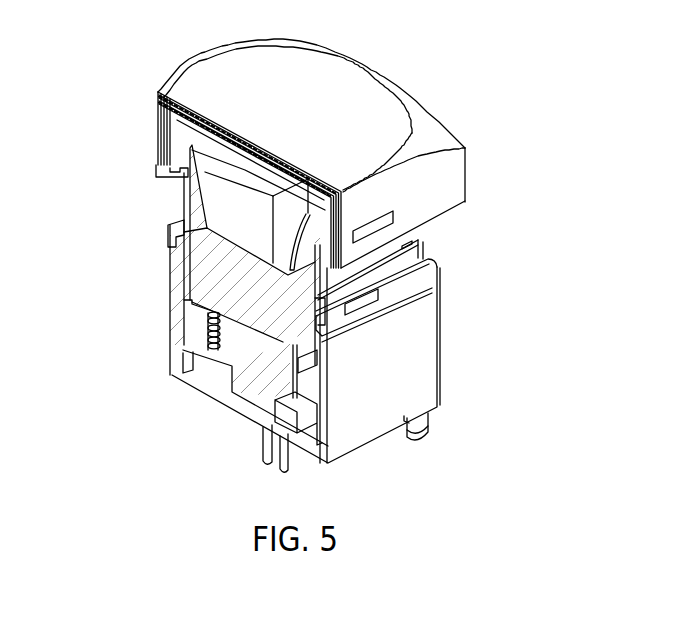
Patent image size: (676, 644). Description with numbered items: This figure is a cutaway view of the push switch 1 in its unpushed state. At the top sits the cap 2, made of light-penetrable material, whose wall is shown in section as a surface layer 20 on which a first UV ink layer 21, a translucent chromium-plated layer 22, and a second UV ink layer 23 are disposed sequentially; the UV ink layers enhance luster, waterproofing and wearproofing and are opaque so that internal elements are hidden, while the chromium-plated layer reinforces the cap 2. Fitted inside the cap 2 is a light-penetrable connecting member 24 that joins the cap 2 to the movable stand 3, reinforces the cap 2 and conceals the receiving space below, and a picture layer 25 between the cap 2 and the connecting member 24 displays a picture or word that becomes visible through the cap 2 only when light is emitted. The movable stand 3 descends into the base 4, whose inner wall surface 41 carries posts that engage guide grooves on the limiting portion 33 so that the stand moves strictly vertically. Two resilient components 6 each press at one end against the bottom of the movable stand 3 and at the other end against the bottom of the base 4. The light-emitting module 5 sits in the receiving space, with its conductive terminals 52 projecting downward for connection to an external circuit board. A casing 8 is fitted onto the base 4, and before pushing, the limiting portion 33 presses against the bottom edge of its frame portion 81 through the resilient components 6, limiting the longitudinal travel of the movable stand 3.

The push switch 1 is at (430, 63).
The cap 2 is at (84, 58).
The surface layer 20 is at (165, 145).
The first UV ink layer 21 is at (162, 112).
The translucent chromium-plated layer 22 is at (168, 104).
The second UV ink layer 23 is at (172, 88).
The connecting member 24 is at (168, 172).
The picture layer 25 is at (250, 167).
The movable stand 3 is at (190, 290).
The limiting portion 33 is at (182, 265).
The base 4 is at (174, 308).
The inner wall surface 41 is at (190, 328).
The light-emitting module 5 is at (416, 238).
The conductive terminals 52 is at (264, 446).
The resilient components 6 is at (190, 360).
The casing 8 is at (90, 240).
The frame portion 81 is at (176, 232).